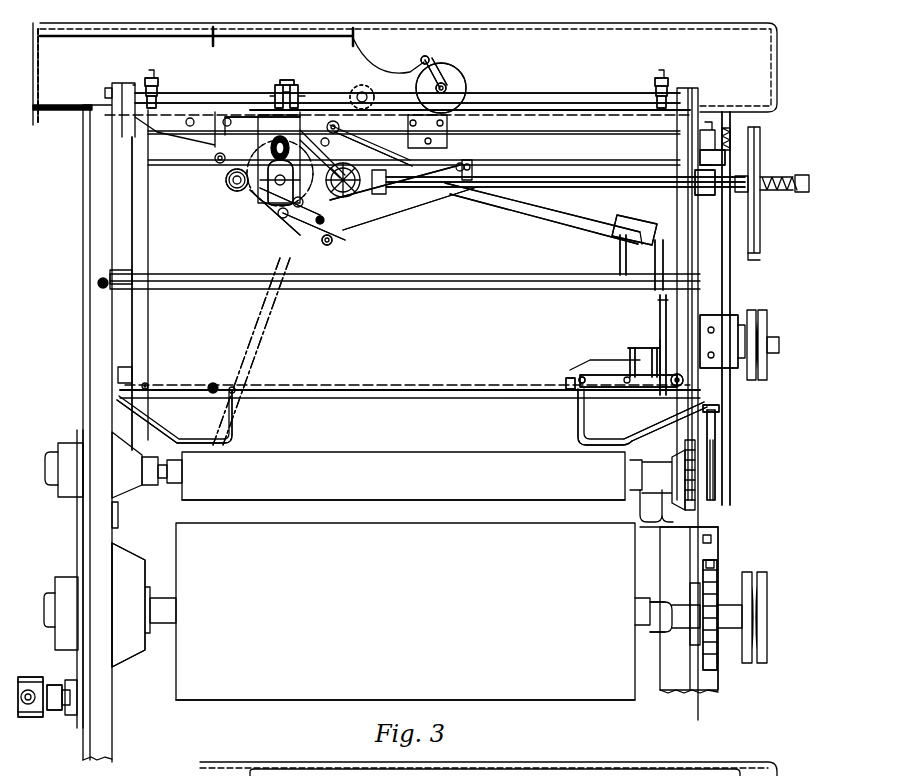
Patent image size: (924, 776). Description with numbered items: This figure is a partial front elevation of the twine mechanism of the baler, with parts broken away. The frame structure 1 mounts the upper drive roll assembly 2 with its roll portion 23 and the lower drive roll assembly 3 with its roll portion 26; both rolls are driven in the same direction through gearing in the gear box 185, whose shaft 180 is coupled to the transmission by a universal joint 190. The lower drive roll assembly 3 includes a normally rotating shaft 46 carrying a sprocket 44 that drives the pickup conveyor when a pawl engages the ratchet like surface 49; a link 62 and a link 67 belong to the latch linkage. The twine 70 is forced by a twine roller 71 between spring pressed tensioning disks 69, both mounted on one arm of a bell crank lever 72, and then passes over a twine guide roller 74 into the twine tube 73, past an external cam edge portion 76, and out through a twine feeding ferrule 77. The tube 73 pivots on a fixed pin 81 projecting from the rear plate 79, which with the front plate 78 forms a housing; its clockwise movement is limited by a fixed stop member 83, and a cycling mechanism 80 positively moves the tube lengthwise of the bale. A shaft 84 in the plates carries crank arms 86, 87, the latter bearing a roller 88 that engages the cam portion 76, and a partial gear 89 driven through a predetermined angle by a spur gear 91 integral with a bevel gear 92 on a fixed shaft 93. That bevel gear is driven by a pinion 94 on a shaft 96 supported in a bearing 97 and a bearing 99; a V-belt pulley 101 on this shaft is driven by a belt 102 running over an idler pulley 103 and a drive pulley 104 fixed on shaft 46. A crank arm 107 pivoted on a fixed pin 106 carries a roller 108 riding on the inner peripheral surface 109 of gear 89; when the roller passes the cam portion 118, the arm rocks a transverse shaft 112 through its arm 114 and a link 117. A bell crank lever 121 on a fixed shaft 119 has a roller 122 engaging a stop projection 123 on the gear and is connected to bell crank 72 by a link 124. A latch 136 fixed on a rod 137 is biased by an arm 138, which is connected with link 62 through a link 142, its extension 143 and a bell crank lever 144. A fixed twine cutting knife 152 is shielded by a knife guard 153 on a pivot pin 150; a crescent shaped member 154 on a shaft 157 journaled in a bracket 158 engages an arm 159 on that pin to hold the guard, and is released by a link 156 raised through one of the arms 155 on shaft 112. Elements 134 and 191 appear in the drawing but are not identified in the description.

The frame structure 1 is at (473, 393).
The upper drive roll assembly 2 is at (332, 486).
The lower drive roll assembly 3 is at (330, 600).
The roll portion 23 is at (268, 498).
The roll portion 26 is at (236, 700).
The sprocket 44 is at (717, 684).
The shaft 46 is at (690, 625).
The ratchet like surface 49 is at (717, 580).
The link 62 is at (715, 435).
The link 67 is at (731, 283).
The twine tensioning disks 69 is at (467, 80).
The twine 70 is at (392, 74).
The twine roller 71 is at (428, 66).
The bell crank lever 72 is at (444, 84).
The twine tube 73 is at (550, 208).
The twine guide roller 74 is at (312, 95).
The cam edge portion 76 is at (400, 192).
The twine feeding ferrule 77 is at (636, 226).
The front plate 78 is at (270, 210).
The rear plate 79 is at (340, 232).
The cycling mechanism 80 is at (497, 222).
The fixed pin 81 is at (405, 128).
The fixed stop member 83 is at (220, 386).
The shaft 84 is at (258, 212).
The crank arm 86 is at (282, 258).
The crank arm 87 is at (268, 196).
The roller 88 is at (235, 184).
The partial gear 89 is at (240, 196).
The spur gear 91 is at (338, 194).
The bevel gear 92 is at (395, 225).
The fixed shaft 93 is at (335, 238).
The pinion 94 is at (382, 196).
The shaft 96 is at (586, 184).
The bearing 97 is at (455, 190).
The bearing 99 is at (710, 196).
The V-belt pulley 101 is at (761, 224).
The belt 102 is at (760, 257).
The idler pulley 103 is at (768, 371).
The drive pulley 104 is at (760, 576).
The fixed pin 106 is at (292, 142).
The crank arm 107 is at (295, 170).
The roller 108 is at (268, 147).
The inner peripheral surface 109 is at (226, 177).
The transverse shaft 112 is at (195, 92).
The arm 114 is at (285, 79).
The link 117 is at (275, 117).
The cam portion 118 is at (278, 218).
The fixed shaft 119 is at (320, 226).
The bell crank lever 121 is at (333, 243).
The roller 122 is at (296, 208).
The stop projection 123 is at (286, 258).
The link 124 is at (462, 180).
The roller 134 is at (340, 127).
The latch 136 is at (619, 250).
The rod 137 is at (656, 250).
The arm 138 is at (680, 258).
The link 142 is at (700, 316).
The extension 143 is at (665, 417).
The bell crank lever 144 is at (718, 408).
The pin 150 is at (600, 395).
The twine cutting knife 152 is at (592, 378).
The knife guard 153 is at (572, 377).
The crescent shaped member 154 is at (672, 363).
The arms 155 is at (152, 76).
The link 156 is at (149, 242).
The shaft 157 is at (632, 350).
The bracket 158 is at (632, 365).
The arm 159 is at (625, 388).
The shaft 180 is at (60, 712).
The gear box 185 is at (120, 695).
The universal joint 190 is at (40, 680).
The pin 191 is at (238, 143).